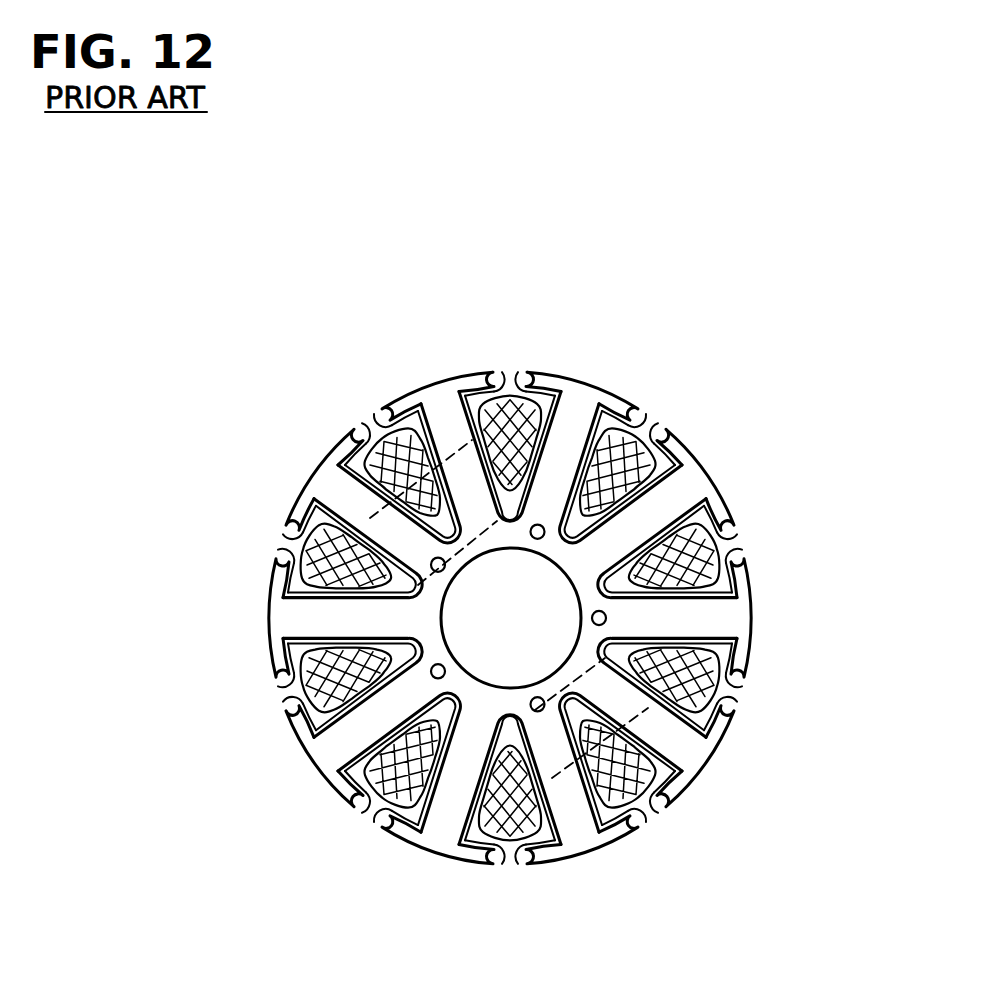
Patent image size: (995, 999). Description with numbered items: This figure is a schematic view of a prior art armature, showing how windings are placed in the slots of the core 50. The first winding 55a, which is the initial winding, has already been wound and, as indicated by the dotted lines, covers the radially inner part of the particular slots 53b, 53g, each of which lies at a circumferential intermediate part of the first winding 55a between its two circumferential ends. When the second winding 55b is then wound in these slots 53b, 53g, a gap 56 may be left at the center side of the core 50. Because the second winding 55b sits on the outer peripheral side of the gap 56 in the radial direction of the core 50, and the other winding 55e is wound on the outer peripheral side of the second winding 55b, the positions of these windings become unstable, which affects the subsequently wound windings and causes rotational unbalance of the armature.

The core 50 is at (637, 521).
The slot 53b is at (362, 418).
The slot 53g is at (655, 765).
The first winding 55a is at (508, 460).
The second winding 55b is at (388, 462).
The other winding 55e is at (410, 455).
The gap 56 is at (446, 455).